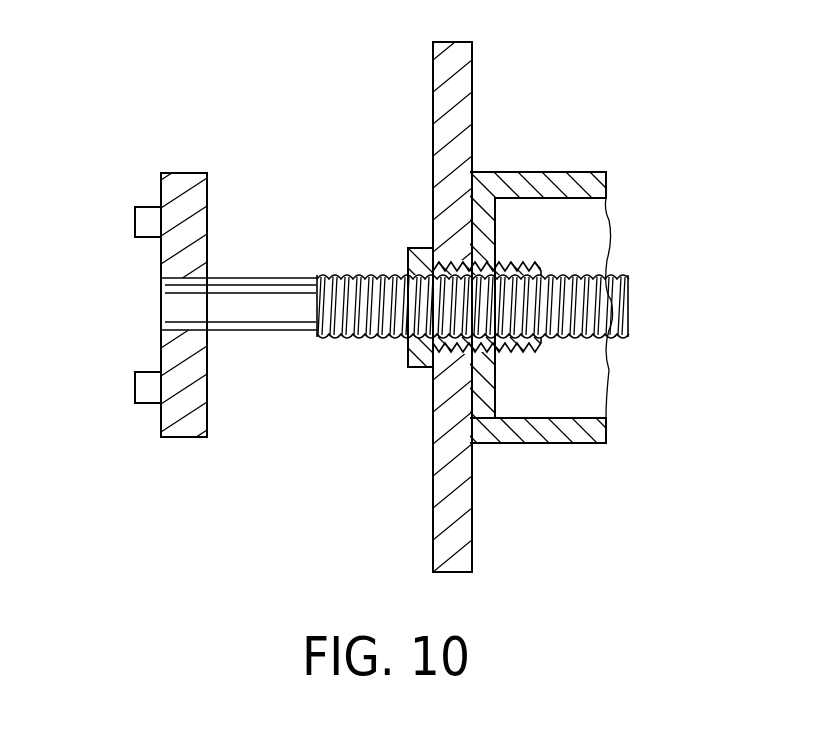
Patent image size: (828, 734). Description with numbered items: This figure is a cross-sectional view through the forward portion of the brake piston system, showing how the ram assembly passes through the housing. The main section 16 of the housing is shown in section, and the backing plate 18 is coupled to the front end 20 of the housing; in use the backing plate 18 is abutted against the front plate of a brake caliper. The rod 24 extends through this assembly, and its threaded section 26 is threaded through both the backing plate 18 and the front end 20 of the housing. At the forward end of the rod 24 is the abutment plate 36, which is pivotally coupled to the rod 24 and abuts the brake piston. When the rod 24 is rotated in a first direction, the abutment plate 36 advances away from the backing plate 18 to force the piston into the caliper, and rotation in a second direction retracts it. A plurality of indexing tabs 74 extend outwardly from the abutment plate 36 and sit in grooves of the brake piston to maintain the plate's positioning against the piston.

The main section 16 is at (563, 171).
The backing plate 18 is at (433, 98).
The front end 20 is at (475, 422).
The rod 24 is at (268, 332).
The threaded section 26 is at (612, 302).
The abutment plate 36 is at (177, 438).
The indexing tabs 74 is at (136, 226).